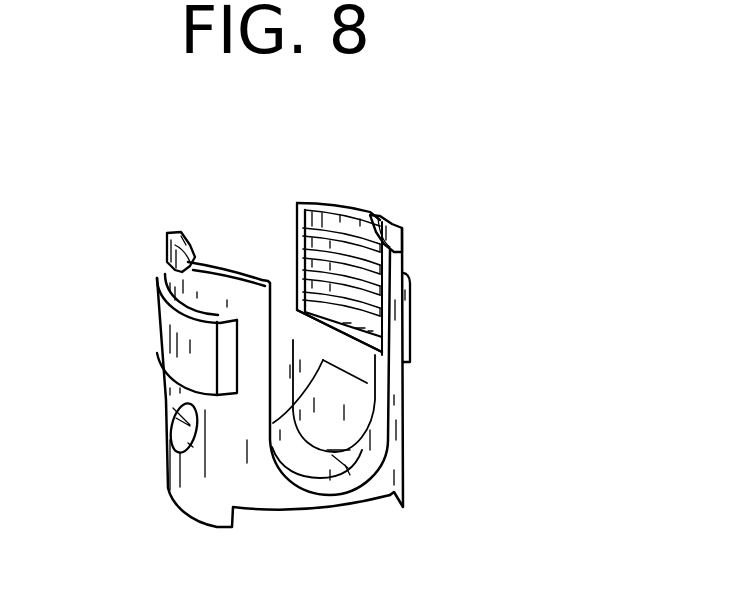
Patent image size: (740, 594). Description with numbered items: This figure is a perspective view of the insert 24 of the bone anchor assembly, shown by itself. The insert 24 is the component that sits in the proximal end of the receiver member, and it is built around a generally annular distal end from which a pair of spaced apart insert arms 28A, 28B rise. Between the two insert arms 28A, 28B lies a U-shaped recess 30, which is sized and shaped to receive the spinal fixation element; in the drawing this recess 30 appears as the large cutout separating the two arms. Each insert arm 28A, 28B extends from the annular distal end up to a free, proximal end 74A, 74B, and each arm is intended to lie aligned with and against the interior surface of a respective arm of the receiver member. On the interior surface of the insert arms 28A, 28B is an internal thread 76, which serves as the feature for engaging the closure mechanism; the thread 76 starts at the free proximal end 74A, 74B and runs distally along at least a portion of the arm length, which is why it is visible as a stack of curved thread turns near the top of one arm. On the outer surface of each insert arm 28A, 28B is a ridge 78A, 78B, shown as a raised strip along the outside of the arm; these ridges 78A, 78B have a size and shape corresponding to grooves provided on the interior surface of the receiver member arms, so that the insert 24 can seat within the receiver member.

The insert 24 is at (492, 323).
The recess 30 is at (258, 262).
The internal thread 76 is at (297, 228).
The free proximal end 74A is at (407, 243).
The free proximal end 74B is at (165, 270).
The insert arm 28A is at (405, 258).
The insert arm 28B is at (203, 298).
The ridge 78A is at (405, 323).
The ridge 78B is at (188, 356).